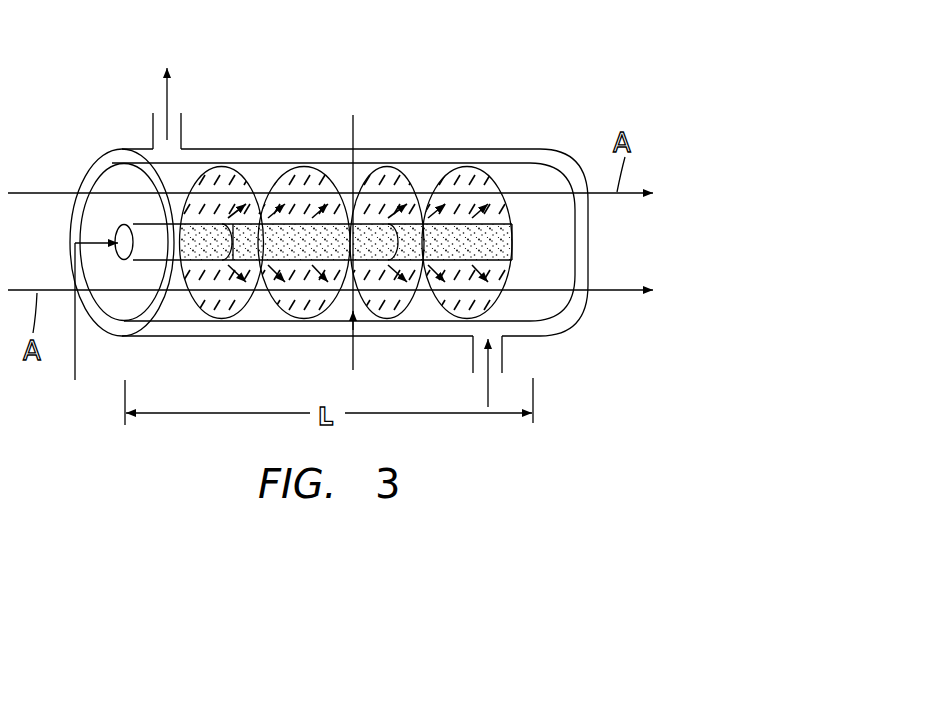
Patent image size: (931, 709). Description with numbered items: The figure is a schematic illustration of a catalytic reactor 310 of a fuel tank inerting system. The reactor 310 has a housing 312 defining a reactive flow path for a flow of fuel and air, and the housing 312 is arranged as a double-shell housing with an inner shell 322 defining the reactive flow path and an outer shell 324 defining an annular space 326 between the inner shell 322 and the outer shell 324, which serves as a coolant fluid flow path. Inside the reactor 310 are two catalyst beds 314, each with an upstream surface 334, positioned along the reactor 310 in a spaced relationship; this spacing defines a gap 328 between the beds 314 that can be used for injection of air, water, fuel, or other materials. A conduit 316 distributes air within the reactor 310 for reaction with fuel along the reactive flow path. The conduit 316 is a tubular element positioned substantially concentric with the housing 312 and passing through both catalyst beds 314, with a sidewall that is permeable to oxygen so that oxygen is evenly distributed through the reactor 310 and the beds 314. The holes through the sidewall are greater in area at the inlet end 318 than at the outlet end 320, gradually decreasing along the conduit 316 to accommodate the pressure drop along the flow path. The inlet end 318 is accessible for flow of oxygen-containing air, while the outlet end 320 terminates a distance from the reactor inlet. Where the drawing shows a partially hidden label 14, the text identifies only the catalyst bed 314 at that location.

The catalytic reactor 310 is at (512, 92).
The housing 312 is at (287, 146).
The catalyst bed 314 is at (437, 172).
The conduit 316 is at (115, 320).
The inlet end 318 is at (110, 223).
The outlet end 320 is at (521, 249).
The inner shell 322 is at (195, 168).
The outer shell 324 is at (240, 148).
The annular space 326 is at (298, 158).
The gap 328 is at (343, 170).
The upstream surface 334 is at (199, 182).
The filter disc 14 is at (270, 168).